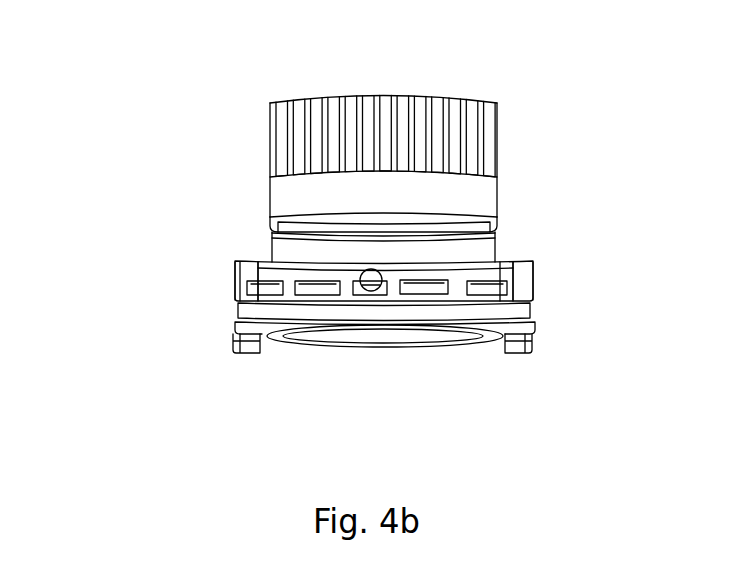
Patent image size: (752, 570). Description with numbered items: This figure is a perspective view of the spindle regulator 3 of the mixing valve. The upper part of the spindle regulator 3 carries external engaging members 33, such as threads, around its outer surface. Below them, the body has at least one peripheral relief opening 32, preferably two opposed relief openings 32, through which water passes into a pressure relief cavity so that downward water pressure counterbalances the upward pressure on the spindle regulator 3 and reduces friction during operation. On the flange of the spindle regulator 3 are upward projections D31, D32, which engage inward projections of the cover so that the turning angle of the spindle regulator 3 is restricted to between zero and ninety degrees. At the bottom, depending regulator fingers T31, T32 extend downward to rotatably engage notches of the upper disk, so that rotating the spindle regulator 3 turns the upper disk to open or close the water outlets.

The spindle regulator 3 is at (206, 83).
The peripheral relief opening 32 is at (353, 272).
The external engaging members 33 is at (500, 148).
The upward projection D31 is at (234, 270).
The upward projection D32 is at (528, 277).
The depending regulator finger T31 is at (240, 353).
The depending regulator finger T32 is at (518, 357).